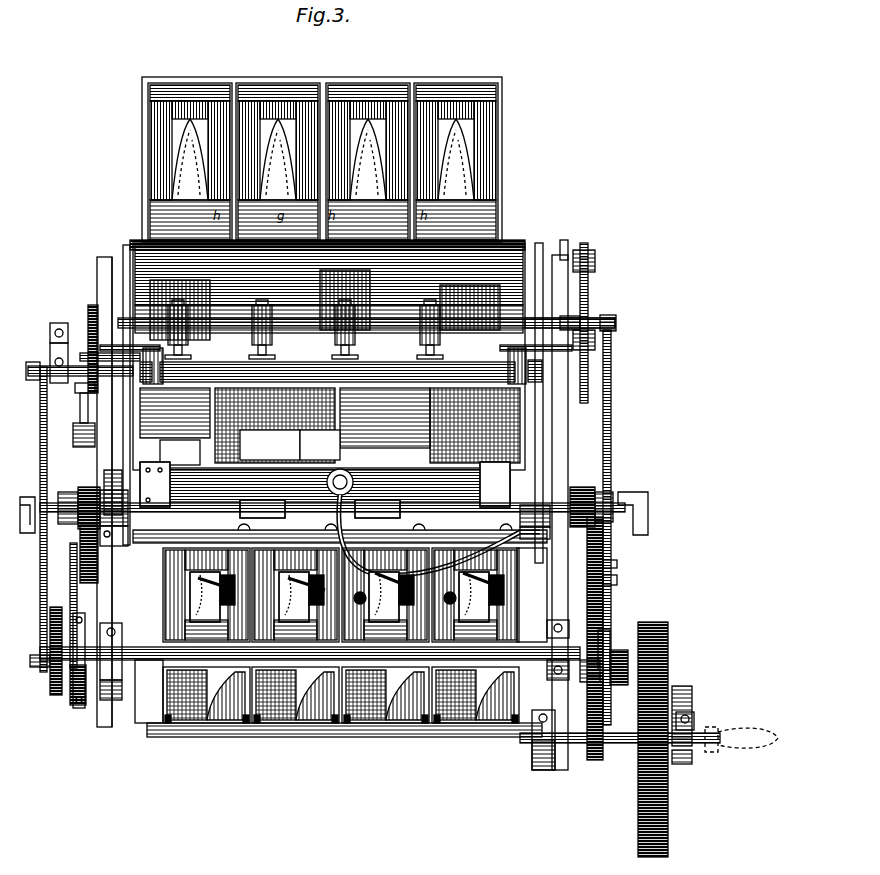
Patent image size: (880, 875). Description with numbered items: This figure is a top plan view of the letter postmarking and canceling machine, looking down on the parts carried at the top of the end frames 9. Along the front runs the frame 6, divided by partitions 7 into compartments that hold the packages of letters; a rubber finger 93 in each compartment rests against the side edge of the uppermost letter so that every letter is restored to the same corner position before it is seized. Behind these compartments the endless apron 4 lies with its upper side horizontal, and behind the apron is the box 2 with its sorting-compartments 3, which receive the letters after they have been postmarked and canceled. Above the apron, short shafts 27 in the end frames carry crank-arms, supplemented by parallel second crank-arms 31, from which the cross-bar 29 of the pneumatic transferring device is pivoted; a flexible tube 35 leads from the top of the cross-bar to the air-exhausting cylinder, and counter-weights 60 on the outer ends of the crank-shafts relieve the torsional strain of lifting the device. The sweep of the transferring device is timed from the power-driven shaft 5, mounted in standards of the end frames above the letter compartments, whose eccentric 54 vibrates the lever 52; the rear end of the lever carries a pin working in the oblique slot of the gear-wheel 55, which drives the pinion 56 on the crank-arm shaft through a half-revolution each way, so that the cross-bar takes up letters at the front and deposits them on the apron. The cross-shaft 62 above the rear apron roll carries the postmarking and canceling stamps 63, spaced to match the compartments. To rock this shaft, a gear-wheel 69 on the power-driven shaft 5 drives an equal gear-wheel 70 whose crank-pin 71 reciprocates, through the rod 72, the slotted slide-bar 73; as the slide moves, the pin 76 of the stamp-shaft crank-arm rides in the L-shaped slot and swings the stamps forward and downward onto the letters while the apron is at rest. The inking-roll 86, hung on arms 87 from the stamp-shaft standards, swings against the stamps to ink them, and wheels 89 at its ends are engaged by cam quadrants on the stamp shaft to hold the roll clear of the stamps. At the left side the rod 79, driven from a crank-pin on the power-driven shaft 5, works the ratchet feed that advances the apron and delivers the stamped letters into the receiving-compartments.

The box 2 is at (327, 154).
The sorting-compartments 3 is at (323, 161).
The endless apron 4 is at (329, 356).
The power-driven shaft 5 is at (341, 595).
The frame 6 is at (341, 650).
The partitions 7 is at (341, 695).
The end frame 9 is at (332, 506).
The short shafts 27 is at (130, 495).
The cross-bar 29 is at (325, 490).
The second crank-arm 31 is at (325, 506).
The flexible tube 35 is at (439, 535).
The lever 52 is at (74, 554).
The eccentric 54 is at (69, 686).
The gear-wheel 55 is at (64, 600).
The pinion 56 is at (332, 497).
The counter-weights 60 is at (333, 518).
The cross-shaft 62 is at (335, 312).
The postmarking and canceling stamps 63 is at (307, 329).
The gear-wheel 69 is at (604, 638).
The gear-wheel 70 is at (611, 565).
The crank-pin 71 is at (617, 583).
The rod 72 is at (617, 527).
The slide-bar 73 is at (589, 294).
The pin 76 is at (38, 651).
The rod 79 is at (33, 519).
The inking-roll 86 is at (336, 363).
The arms 87 is at (155, 380).
The wheel 89 is at (332, 381).
The rubber finger 93 is at (345, 586).